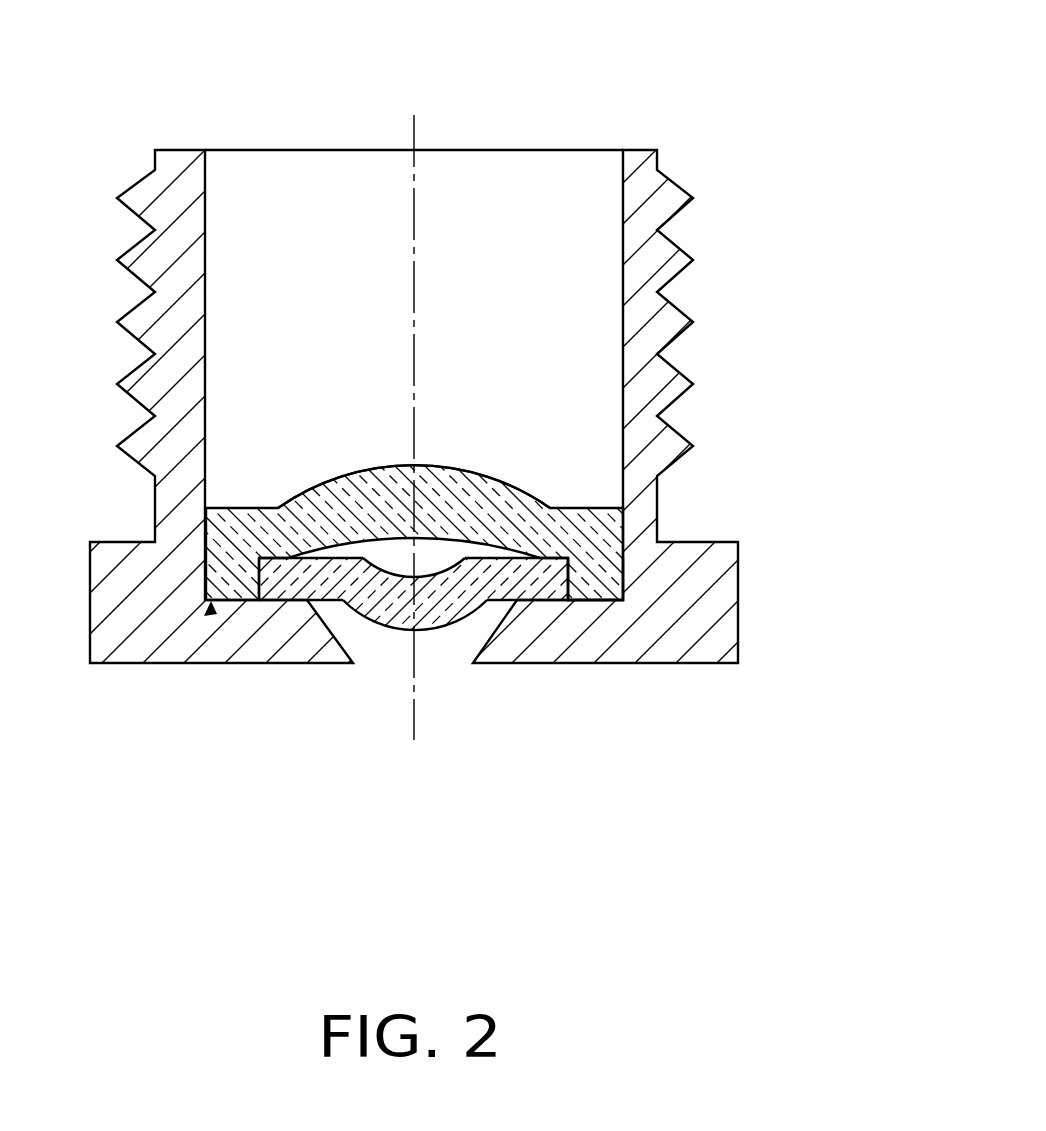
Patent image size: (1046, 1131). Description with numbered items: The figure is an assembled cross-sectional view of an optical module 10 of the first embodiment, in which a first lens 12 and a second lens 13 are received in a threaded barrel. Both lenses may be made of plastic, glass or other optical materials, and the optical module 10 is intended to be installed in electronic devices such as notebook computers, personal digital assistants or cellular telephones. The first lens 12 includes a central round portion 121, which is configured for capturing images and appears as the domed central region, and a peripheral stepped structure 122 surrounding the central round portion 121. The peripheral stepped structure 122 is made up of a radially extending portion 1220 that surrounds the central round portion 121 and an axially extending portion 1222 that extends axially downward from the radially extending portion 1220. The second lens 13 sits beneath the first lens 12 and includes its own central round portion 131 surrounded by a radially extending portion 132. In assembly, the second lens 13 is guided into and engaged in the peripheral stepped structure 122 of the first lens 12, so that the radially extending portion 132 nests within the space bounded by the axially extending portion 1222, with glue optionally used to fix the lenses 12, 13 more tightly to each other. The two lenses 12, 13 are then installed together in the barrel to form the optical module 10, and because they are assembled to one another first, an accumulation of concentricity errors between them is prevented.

The optical module 10 is at (528, 88).
The first lens 12 is at (488, 487).
The central round portion 121 is at (458, 463).
The peripheral stepped structure 122 is at (488, 550).
The radially extending portion 1220 is at (575, 535).
The axially extending portion 1222 is at (597, 588).
The second lens 13 is at (588, 428).
The central round portion 131 is at (383, 607).
The radially extending portion 132 is at (307, 580).